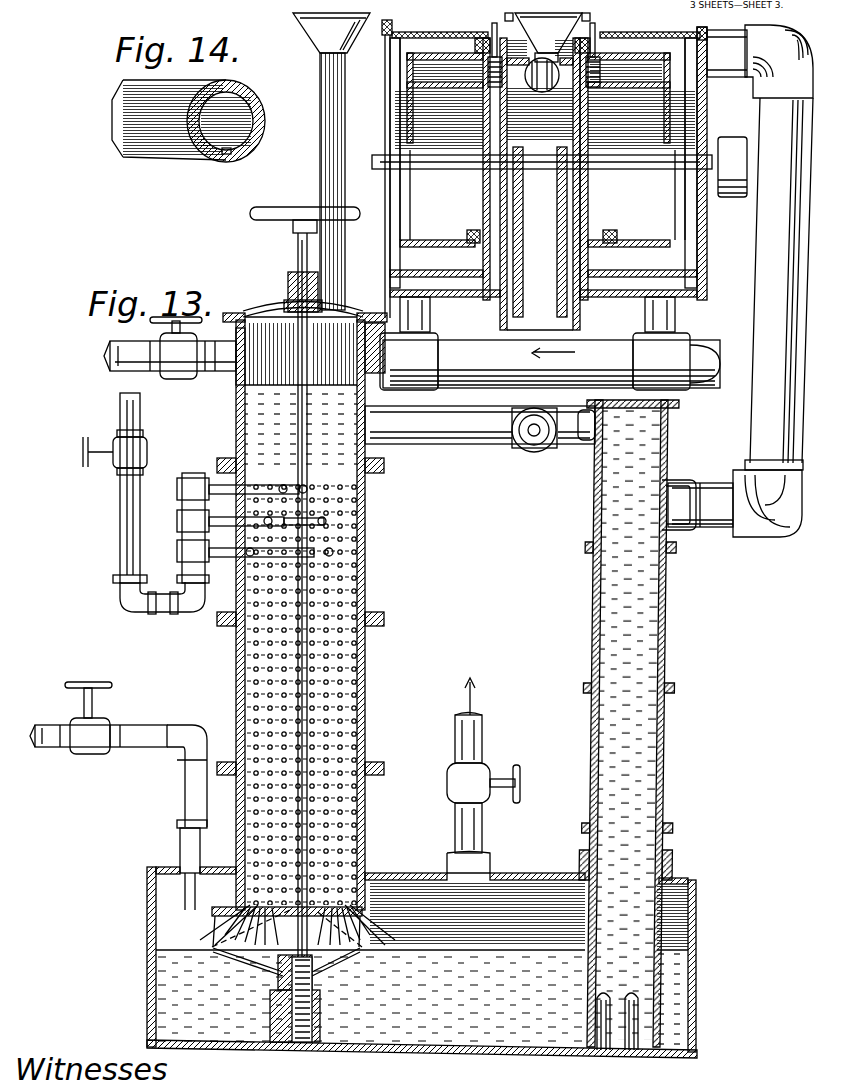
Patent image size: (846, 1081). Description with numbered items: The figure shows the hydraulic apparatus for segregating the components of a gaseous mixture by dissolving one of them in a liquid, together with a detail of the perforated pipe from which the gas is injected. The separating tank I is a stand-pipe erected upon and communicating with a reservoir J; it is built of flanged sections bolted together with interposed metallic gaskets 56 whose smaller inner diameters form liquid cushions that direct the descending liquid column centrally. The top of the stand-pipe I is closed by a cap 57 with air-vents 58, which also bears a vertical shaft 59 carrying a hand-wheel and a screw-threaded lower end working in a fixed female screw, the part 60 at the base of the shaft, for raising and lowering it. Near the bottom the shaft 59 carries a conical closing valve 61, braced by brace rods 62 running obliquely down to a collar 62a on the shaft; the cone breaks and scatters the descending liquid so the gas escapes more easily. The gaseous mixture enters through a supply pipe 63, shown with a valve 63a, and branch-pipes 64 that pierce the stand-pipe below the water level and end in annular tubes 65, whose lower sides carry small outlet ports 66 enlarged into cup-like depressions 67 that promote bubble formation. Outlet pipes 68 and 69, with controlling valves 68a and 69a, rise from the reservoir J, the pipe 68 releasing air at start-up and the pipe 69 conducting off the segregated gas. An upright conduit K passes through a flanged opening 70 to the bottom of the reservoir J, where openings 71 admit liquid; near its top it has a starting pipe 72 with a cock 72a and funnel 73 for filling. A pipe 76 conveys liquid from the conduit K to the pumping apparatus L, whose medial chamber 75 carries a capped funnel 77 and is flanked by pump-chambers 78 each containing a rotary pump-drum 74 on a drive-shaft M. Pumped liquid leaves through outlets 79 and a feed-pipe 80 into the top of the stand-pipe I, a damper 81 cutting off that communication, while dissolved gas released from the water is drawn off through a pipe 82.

In FIG. 13, the gaskets 56 is at (384, 468).
In FIG. 13, the cap 57 is at (243, 310).
In FIG. 13, the air-vents 58 is at (268, 306).
In FIG. 13, the vertical shaft 59 is at (302, 250).
In FIG. 13, the step bearing 60 is at (322, 1000).
In FIG. 13, the closing valve 61 is at (365, 925).
In FIG. 13, the brace rods 62 is at (258, 968).
In FIG. 13, the collar 62a is at (300, 978).
In FIG. 13, the supply pipe 63 is at (120, 535).
In FIG. 13, the valve 63a is at (113, 445).
In FIG. 13, the branch-pipes 64 is at (210, 480).
In FIG. 13, the annular tubes 65 is at (320, 548).
In FIG. 14, the outlet ports 66 is at (244, 150).
In FIG. 14, the cup-like depressions 67 is at (232, 159).
In FIG. 13, the outlet pipe 68 is at (482, 736).
In FIG. 13, the controlling valve 68a is at (470, 785).
In FIG. 13, the outlet pipe 69 is at (135, 730).
In FIG. 13, the controlling valve 69a is at (95, 730).
In FIG. 13, the flanged opening 70 is at (670, 862).
In FIG. 13, the openings 71 is at (633, 992).
In FIG. 13, the starting pipe 72 is at (498, 445).
In FIG. 13, the cock 72a is at (538, 445).
In FIG. 13, the funnel 73 is at (318, 40).
In FIG. 13, the rotary pump-drum 74 is at (418, 60).
In FIG. 13, the medial chamber 75 is at (540, 184).
In FIG. 13, the pipe 76 is at (800, 243).
In FIG. 13, the funnel 77 is at (547, 52).
In FIG. 13, the pump-chambers 78 is at (395, 67).
In FIG. 13, the outlets 79 is at (420, 309).
In FIG. 13, the feed-pipe 80 is at (467, 347).
In FIG. 13, the damper 81 is at (361, 313).
In FIG. 13, the pipe 82 is at (212, 372).
In FIG. 13, the separating tank I is at (365, 496).
In FIG. 13, the reservoir J is at (697, 925).
In FIG. 13, the upright conduit K is at (668, 636).
In FIG. 13, the pumping apparatus L is at (613, 33).
In FIG. 13, the drive-shaft M is at (385, 135).